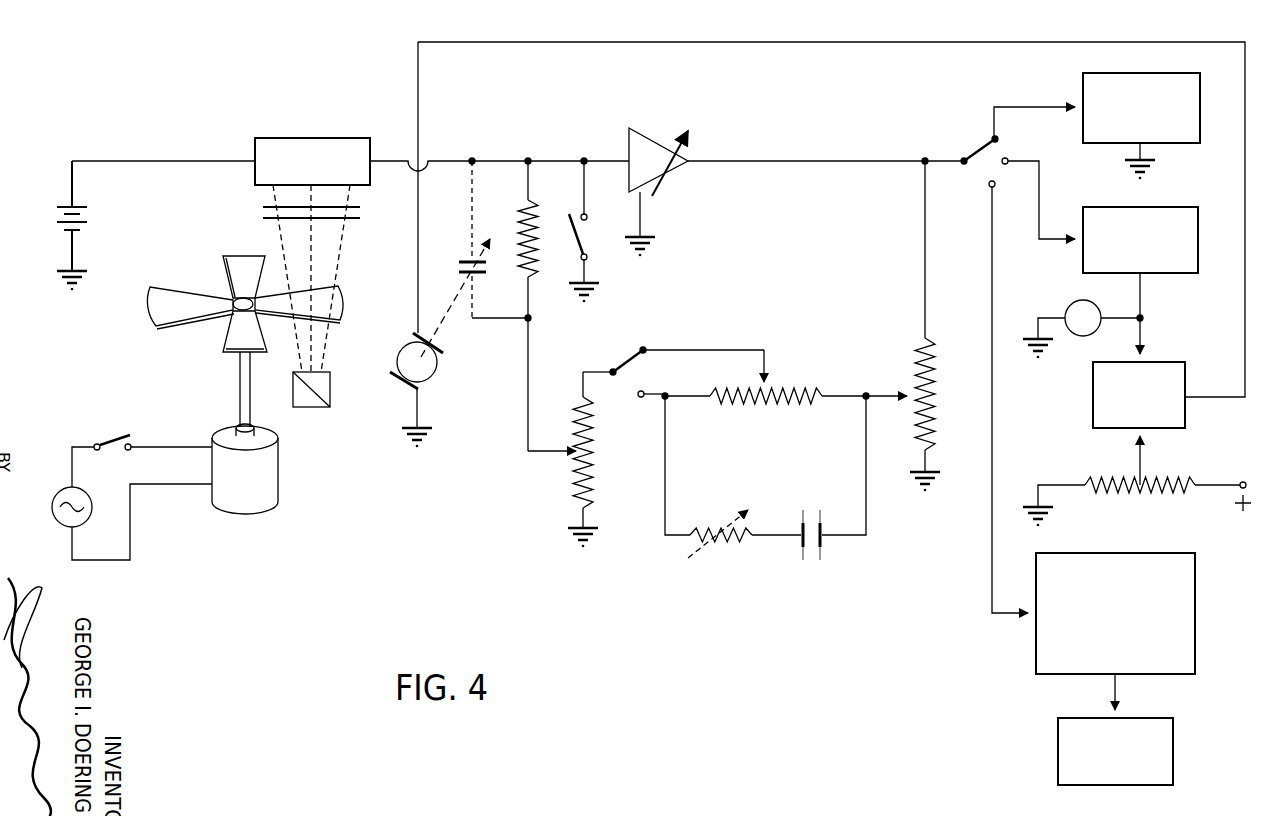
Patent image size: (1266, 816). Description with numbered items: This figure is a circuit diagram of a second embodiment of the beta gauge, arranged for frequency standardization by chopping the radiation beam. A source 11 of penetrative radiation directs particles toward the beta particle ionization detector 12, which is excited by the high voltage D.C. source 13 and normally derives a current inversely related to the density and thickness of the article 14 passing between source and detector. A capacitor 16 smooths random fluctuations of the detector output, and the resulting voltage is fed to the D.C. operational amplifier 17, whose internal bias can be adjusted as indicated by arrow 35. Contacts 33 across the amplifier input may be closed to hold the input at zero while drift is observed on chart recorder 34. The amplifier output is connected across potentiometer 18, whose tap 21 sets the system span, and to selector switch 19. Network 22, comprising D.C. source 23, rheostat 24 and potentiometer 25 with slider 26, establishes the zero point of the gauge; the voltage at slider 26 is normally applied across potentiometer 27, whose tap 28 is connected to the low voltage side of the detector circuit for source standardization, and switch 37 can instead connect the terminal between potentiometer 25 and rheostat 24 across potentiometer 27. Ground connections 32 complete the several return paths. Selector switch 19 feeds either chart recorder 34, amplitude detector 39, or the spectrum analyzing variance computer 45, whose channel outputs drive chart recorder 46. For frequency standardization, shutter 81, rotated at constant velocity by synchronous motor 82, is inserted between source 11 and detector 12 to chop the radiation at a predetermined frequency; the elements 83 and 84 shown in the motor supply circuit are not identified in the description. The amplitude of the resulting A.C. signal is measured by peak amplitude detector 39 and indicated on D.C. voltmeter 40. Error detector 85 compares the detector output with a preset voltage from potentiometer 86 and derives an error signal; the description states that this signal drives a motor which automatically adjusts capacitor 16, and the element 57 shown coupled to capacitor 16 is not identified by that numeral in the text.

The radiation source 11 is at (312, 410).
The beta particle ionization detector 12 is at (307, 138).
The D.C. source 13 is at (72, 198).
The article 14 is at (264, 210).
The capacitor 16 is at (465, 257).
The D.C. operational amplifier 17 is at (647, 136).
The potentiometer 18 is at (936, 370).
The selector switch 19 is at (974, 150).
The tap 21 is at (892, 390).
The network 22 is at (792, 458).
The D.C. source 23 is at (827, 548).
The rheostat 24 is at (732, 552).
The potentiometer 25 is at (742, 404).
The slider 26 is at (764, 358).
The potentiometer 27 is at (594, 430).
The tap 28 is at (548, 452).
The ground 32 is at (70, 256).
The contacts 33 is at (578, 246).
The chart recorder 34 is at (1176, 73).
The arrow 35 is at (688, 151).
The switch 37 is at (610, 362).
The amplitude detector 39 is at (1198, 221).
The D.C. voltmeter 40 is at (1070, 306).
The spectrum analyzing variance computer 45 is at (1046, 647).
The chart recorder 46 is at (1058, 762).
The coupling device 57 is at (437, 372).
The shutter 81 is at (157, 312).
The synchronous motor 82 is at (265, 486).
The AC source 83 is at (55, 488).
The switch 84 is at (118, 434).
The error detector 85 is at (1093, 404).
The potentiometer 86 is at (1143, 470).